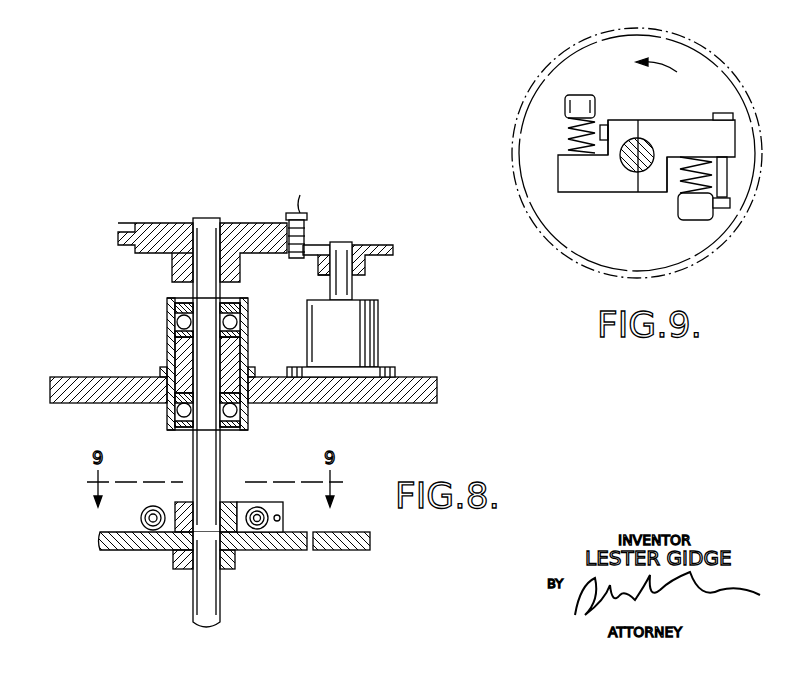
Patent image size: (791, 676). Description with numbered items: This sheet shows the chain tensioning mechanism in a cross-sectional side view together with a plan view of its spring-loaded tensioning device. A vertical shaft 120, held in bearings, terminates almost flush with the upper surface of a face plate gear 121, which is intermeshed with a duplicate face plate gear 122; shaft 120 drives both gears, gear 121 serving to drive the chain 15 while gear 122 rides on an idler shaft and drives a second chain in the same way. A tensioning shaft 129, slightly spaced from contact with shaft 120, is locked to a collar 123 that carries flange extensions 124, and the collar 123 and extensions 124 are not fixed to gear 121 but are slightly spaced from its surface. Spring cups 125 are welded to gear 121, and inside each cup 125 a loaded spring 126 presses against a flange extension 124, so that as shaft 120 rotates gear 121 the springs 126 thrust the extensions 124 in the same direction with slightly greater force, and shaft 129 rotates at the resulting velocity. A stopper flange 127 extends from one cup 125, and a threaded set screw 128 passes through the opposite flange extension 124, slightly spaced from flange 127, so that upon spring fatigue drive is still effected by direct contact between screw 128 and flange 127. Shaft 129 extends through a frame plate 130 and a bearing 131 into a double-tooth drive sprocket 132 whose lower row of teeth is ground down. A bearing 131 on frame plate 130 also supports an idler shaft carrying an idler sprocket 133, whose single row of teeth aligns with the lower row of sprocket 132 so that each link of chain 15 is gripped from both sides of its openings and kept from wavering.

In FIG. 8, the chain 15 is at (307, 230).
In FIG. 8, the vertical shaft 120 is at (210, 610).
In FIG. 8, the face plate gear 121 is at (278, 545).
In FIG. 9, the face plate gear 121 is at (585, 247).
In FIG. 8, the face plate gear 122 is at (345, 547).
In FIG. 9, the collar 123 is at (620, 132).
In FIG. 9, the flange extensions 124 is at (695, 125).
In FIG. 9, the spring cups 125 is at (575, 102).
In FIG. 9, the spring 126 is at (570, 138).
In FIG. 9, the stopper flange 127 is at (720, 205).
In FIG. 8, the threaded set screw 128 is at (281, 518).
In FIG. 9, the threaded set screw 128 is at (717, 160).
In FIG. 8, the tensioning shaft 129 is at (210, 442).
In FIG. 9, the tensioning shaft 129 is at (633, 163).
In FIG. 8, the frame plate 130 is at (83, 378).
In FIG. 8, the bearing 131 is at (238, 347).
In FIG. 8, the double-tooth drive sprocket 132 is at (165, 235).
In FIG. 8, the idler sprocket 133 is at (365, 245).